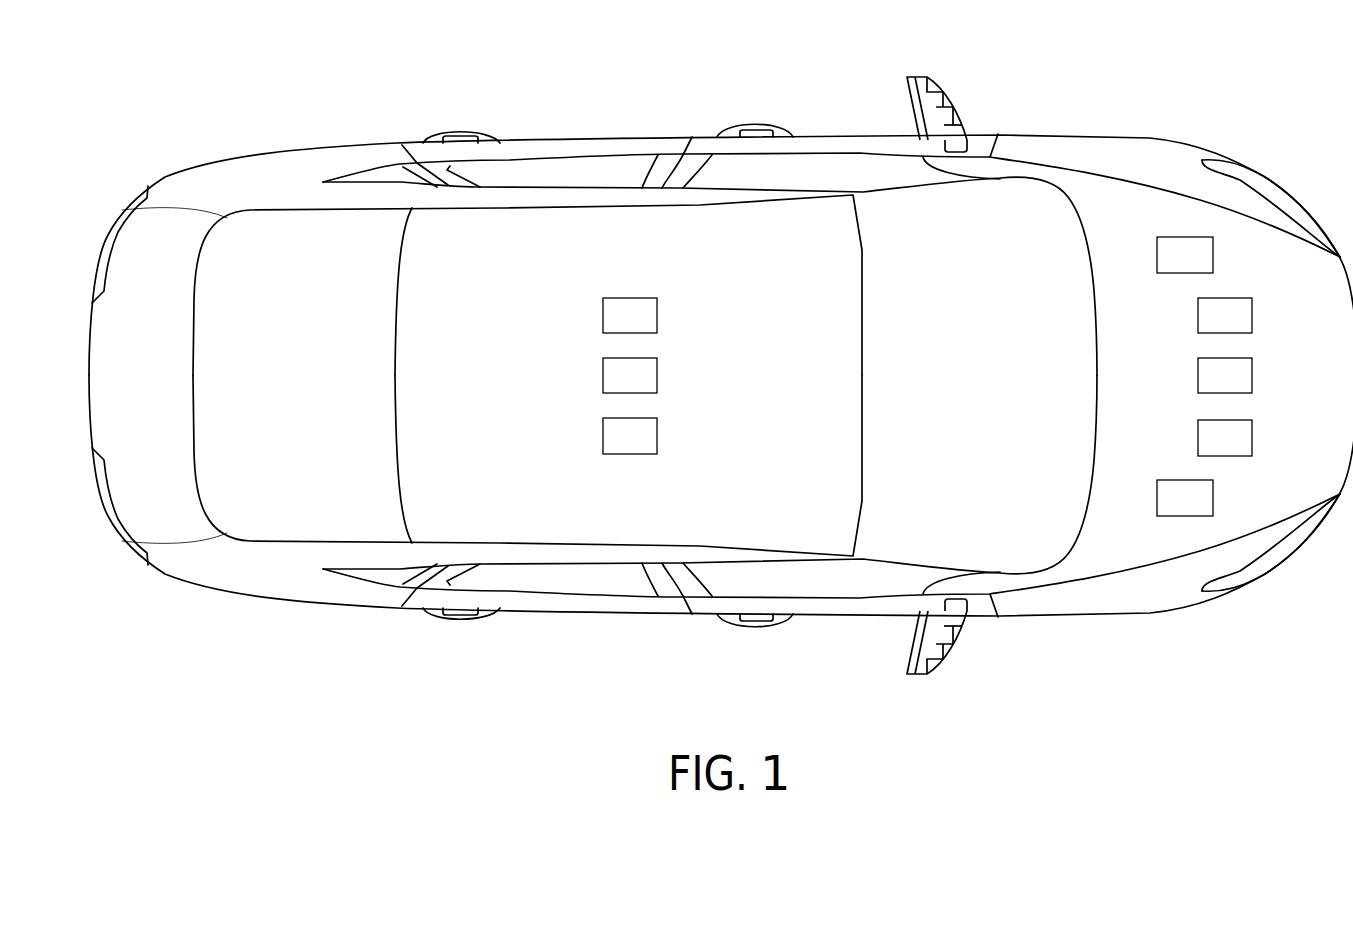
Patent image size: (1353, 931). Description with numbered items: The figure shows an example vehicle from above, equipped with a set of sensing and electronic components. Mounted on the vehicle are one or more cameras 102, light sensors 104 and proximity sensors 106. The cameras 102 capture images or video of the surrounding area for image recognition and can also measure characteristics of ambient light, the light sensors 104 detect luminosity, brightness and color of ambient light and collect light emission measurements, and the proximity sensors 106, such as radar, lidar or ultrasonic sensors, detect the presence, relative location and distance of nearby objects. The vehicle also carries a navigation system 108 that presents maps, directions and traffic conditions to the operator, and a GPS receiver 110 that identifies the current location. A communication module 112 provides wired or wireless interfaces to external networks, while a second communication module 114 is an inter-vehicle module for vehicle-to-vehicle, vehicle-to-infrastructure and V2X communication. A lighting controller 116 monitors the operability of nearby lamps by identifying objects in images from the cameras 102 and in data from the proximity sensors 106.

The camera 102 is at (945, 92).
The light sensor 104 is at (953, 107).
The proximity sensor 106 is at (958, 121).
The navigation system 108 is at (1203, 265).
The global positioning system (GPS) receiver 110 is at (648, 326).
The communication module 112 is at (648, 386).
The communication module 114 is at (648, 446).
The lighting controller 116 is at (1203, 508).